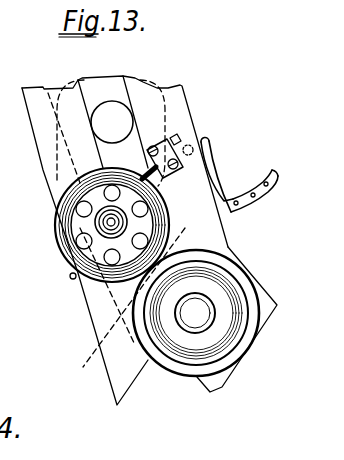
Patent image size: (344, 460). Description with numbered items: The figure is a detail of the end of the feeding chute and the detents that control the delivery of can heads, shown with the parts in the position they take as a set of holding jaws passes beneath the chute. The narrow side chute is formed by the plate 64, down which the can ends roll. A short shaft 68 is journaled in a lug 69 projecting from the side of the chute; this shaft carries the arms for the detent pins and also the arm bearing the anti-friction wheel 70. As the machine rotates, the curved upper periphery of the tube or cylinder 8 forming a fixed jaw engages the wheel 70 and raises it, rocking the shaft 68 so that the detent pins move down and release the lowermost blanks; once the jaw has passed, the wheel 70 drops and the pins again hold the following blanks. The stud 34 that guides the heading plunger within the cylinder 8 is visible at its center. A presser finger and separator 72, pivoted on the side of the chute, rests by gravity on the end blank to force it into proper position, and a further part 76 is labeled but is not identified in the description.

The plates 64 is at (173, 103).
The lugs 69 is at (178, 147).
The presser finger and separator 72 is at (221, 162).
The hook 76 is at (254, 192).
The short shaft 68 is at (167, 172).
The anti-friction roller or wheel 70 is at (75, 258).
The tube or cylinder 8 is at (216, 362).
The stud 34 is at (195, 315).